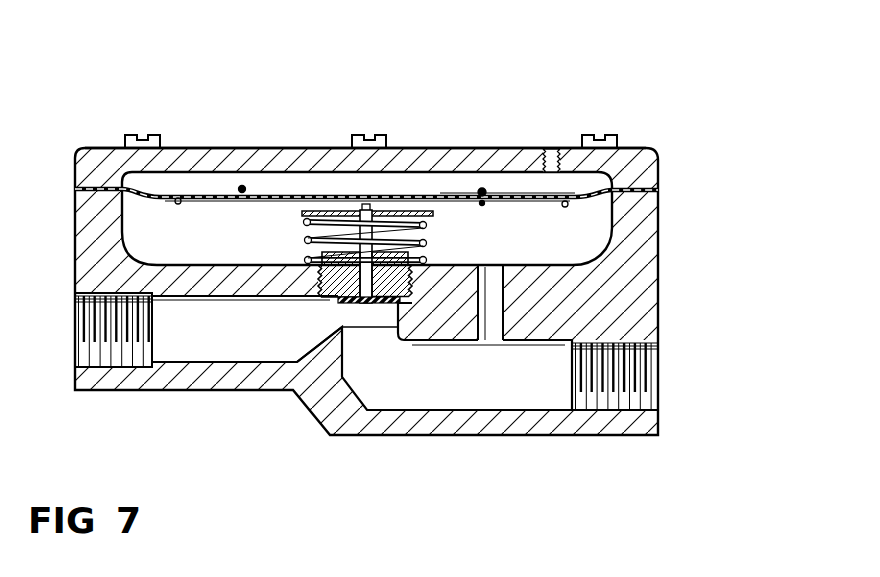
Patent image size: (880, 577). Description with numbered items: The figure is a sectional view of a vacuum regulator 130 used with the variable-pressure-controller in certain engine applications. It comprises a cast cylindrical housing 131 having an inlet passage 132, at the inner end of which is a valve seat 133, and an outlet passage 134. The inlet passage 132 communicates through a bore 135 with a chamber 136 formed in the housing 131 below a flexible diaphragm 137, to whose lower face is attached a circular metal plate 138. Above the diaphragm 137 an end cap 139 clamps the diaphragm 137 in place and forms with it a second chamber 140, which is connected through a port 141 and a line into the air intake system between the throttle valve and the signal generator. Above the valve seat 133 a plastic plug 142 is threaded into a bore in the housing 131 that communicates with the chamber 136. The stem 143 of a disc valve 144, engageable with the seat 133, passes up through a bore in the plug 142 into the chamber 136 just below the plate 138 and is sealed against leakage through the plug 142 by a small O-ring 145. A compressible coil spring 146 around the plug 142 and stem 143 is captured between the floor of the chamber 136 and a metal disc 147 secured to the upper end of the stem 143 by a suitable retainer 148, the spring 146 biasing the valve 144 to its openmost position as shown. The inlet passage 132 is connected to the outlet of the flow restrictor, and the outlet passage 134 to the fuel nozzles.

The pressure regulator assembly 130 is at (663, 76).
The cast cylindrical housing 131 is at (650, 257).
The inlet passage 132 is at (650, 370).
The valve seat 133 is at (375, 330).
The outlet passage 134 is at (82, 335).
The bore 135 is at (492, 337).
The chamber 136 is at (140, 240).
The flexible diaphragm 137 is at (155, 201).
The circular metal plate 138 is at (503, 203).
The end cap 139 is at (187, 148).
The second chamber 140 is at (290, 184).
The port 141 is at (554, 148).
The plastic plug 142 is at (337, 301).
The stem 143 is at (315, 255).
The disc valve 144 is at (247, 331).
The O-ring 145 is at (382, 247).
The compressible coil spring 146 is at (425, 242).
The metal disc 147 is at (300, 222).
The retainer 148 is at (300, 212).